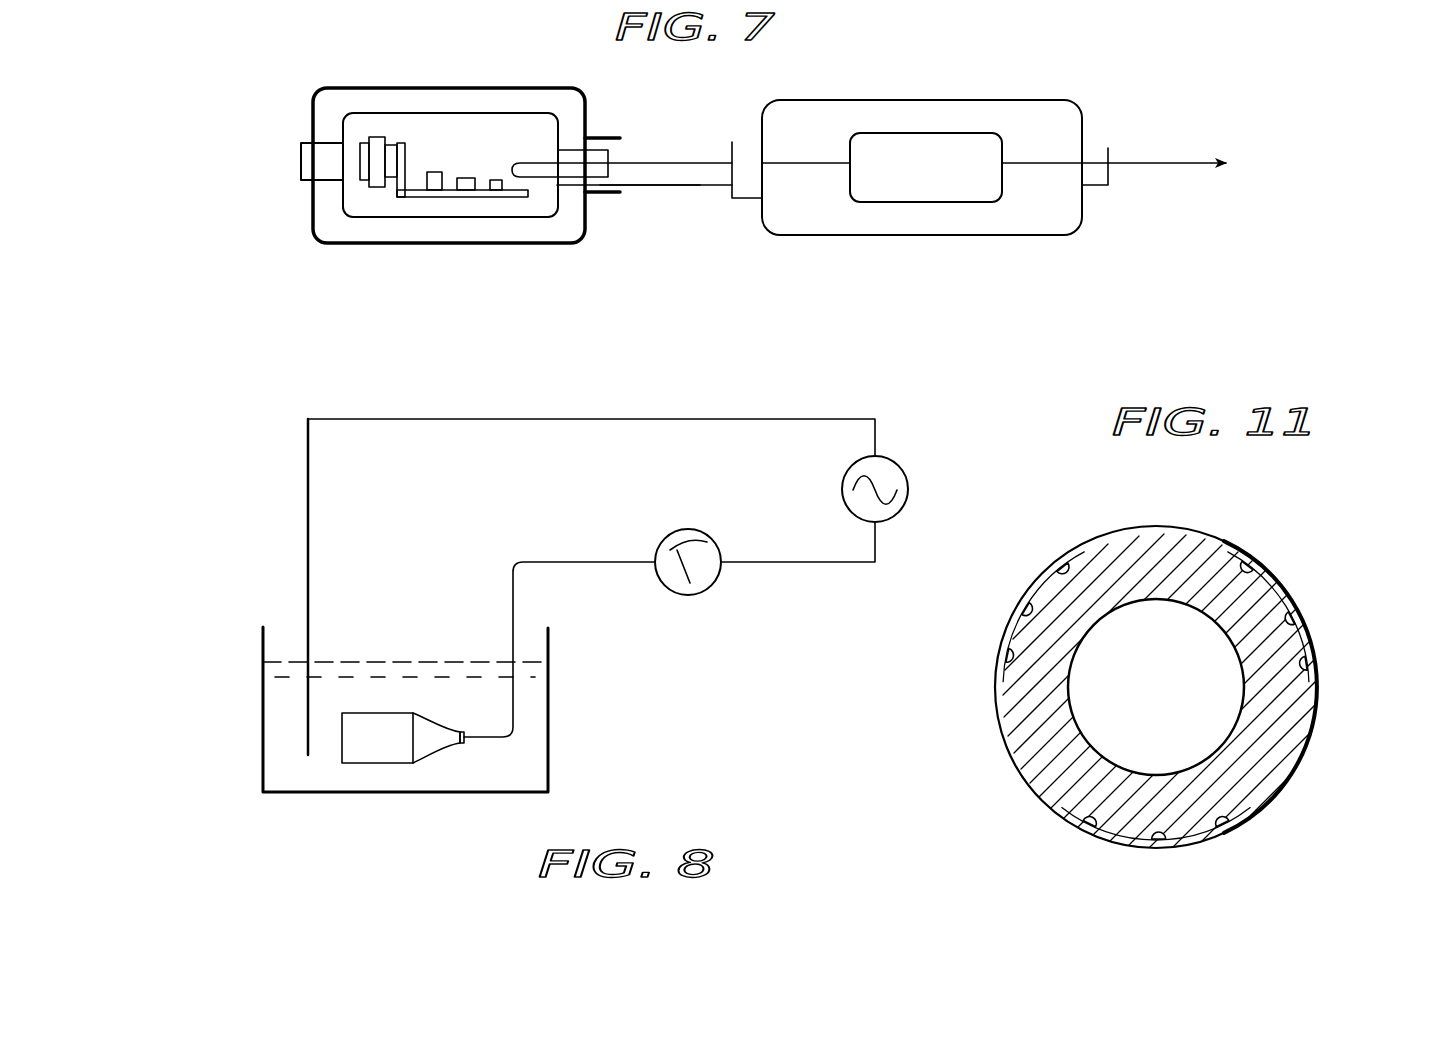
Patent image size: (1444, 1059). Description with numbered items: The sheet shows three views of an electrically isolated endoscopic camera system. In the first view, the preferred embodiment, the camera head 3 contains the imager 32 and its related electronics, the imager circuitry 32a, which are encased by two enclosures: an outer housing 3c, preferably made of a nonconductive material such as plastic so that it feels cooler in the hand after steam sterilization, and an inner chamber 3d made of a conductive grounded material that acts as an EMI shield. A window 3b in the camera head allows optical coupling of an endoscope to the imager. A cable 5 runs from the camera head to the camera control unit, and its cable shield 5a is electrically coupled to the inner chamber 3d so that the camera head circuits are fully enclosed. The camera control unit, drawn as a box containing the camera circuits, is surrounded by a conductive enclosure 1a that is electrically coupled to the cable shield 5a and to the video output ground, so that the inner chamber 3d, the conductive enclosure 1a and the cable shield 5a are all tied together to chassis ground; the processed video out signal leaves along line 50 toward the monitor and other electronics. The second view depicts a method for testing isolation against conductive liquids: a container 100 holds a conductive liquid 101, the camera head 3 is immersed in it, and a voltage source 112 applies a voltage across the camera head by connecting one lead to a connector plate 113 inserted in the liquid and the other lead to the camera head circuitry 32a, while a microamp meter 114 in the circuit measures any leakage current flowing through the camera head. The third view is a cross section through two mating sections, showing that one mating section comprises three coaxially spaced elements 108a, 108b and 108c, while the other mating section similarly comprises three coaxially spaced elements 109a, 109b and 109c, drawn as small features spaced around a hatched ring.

In FIG. 7, the conductive enclosure 1a is at (1000, 78).
In FIG. 7, the camera head 3 is at (401, 169).
In FIG. 8, the camera head 3 is at (375, 764).
In FIG. 7, the window 3b is at (300, 183).
In FIG. 7, the outer housing 3c is at (376, 88).
In FIG. 7, the inner chamber 3d is at (462, 113).
In FIG. 7, the cable 5 is at (678, 163).
In FIG. 7, the cable shield 5a is at (675, 188).
In FIG. 7, the imager 32 is at (389, 192).
In FIG. 7, the imager circuitry 32a is at (520, 198).
In FIG. 7, the video out line 50 is at (1190, 163).
In FIG. 8, the container 100 is at (307, 793).
In FIG. 8, the conductive liquid 101 is at (277, 669).
In FIG. 8, the voltage source 112 is at (890, 466).
In FIG. 8, the connector plate 113 is at (305, 738).
In FIG. 8, the microamp meter 114 is at (709, 590).
In FIG. 11, the coaxially spaced element 108a is at (1286, 597).
In FIG. 11, the coaxially spaced element 108b is at (1182, 847).
In FIG. 11, the coaxially spaced element 108c is at (1027, 580).
In FIG. 11, the coaxially spaced element 109a is at (1297, 622).
In FIG. 11, the coaxially spaced element 109b is at (1140, 840).
In FIG. 11, the coaxially spaced element 109c is at (1022, 613).